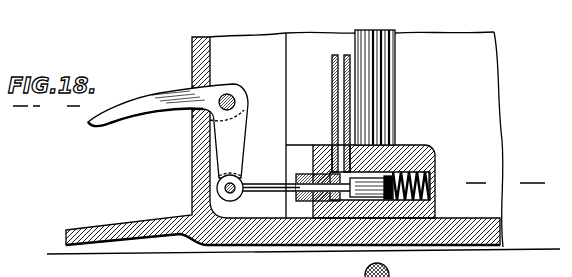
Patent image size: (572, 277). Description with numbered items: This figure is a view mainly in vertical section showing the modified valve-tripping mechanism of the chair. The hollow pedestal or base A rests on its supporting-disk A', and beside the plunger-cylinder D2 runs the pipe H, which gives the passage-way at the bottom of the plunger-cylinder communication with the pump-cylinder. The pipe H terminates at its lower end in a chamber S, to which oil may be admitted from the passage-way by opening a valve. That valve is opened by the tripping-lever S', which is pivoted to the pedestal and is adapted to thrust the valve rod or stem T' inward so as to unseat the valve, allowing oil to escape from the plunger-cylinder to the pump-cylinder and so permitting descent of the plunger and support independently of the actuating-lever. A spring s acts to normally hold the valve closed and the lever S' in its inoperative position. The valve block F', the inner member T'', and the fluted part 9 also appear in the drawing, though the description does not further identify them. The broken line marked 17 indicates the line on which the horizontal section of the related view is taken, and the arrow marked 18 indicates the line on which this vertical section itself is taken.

The hollow pedestal or base A is at (303, 143).
The supporting-disk A' is at (283, 141).
The plunger-cylinder D2 is at (301, 125).
The block F' is at (390, 181).
The valve rod or stem T' is at (297, 180).
The piston T'' is at (385, 157).
The spring s is at (433, 183).
The pipe or tube H is at (339, 104).
The fluted column 9 is at (407, 172).
The tripping-lever S' is at (176, 133).
The section line 17 is at (281, 158).
The chamber S is at (334, 241).
The section line 18 is at (377, 263).